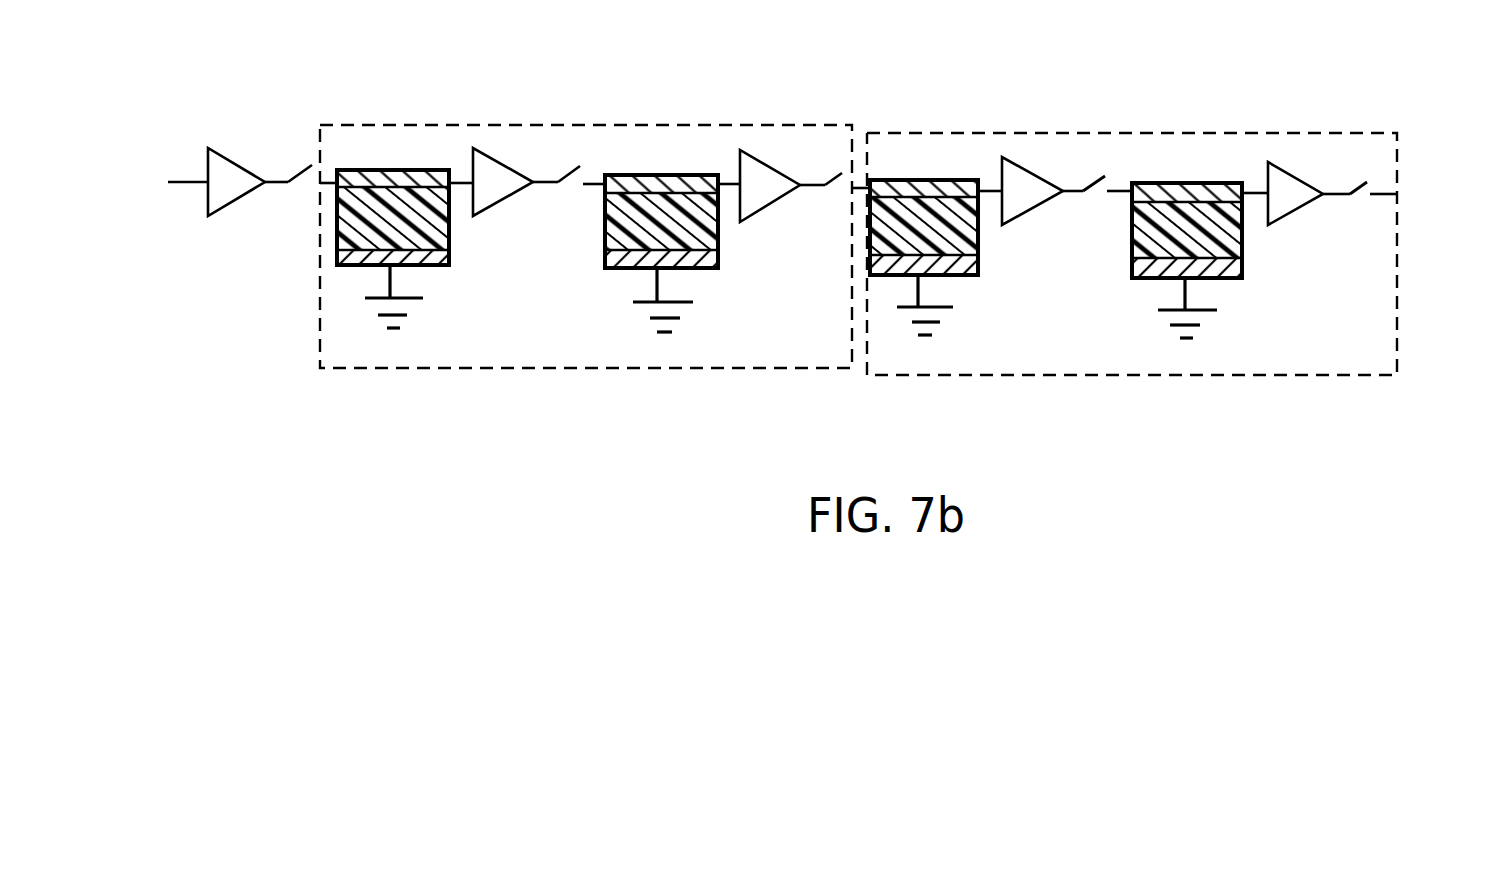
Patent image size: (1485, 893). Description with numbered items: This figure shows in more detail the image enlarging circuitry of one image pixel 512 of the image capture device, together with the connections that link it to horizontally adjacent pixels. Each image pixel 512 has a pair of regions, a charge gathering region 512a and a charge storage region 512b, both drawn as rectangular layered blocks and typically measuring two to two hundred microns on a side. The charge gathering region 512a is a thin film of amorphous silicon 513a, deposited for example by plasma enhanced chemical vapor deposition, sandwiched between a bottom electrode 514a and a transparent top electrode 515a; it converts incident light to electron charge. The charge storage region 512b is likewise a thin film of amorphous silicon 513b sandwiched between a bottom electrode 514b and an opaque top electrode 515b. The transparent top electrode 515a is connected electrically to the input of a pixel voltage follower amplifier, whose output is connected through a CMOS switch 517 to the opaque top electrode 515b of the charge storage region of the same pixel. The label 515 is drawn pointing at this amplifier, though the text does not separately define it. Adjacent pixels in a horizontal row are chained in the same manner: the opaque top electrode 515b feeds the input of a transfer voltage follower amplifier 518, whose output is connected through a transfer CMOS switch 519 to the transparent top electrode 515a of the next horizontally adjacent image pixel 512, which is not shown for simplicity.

The image pixel 512 is at (320, 368).
The charge gathering region 512a is at (552, 114).
The charge storage region 512b is at (852, 125).
The amorphous silicon thin film 513a is at (978, 234).
The amorphous silicon thin film 513b is at (1242, 240).
The bottom electrode 514a is at (970, 277).
The bottom electrode 514b is at (1227, 278).
The transparent top electrode 515a is at (915, 180).
The opaque top electrode 515b is at (1203, 183).
The amplifier 515 is at (1028, 166).
The CMOS switch 517 is at (1092, 166).
The transfer voltage follower amplifier 518 is at (1293, 175).
The transfer CMOS switch 519 is at (1381, 168).